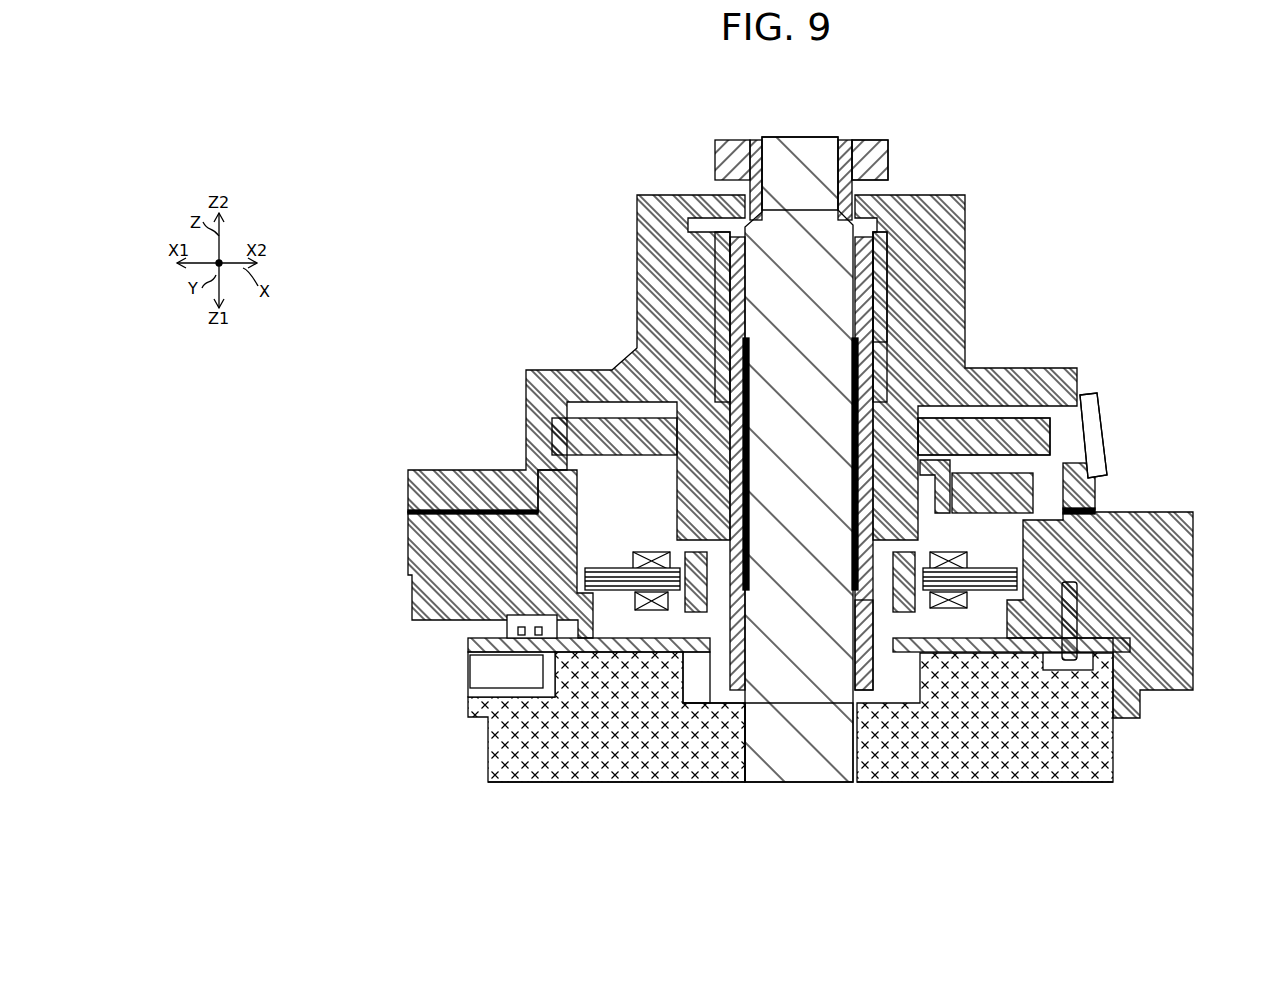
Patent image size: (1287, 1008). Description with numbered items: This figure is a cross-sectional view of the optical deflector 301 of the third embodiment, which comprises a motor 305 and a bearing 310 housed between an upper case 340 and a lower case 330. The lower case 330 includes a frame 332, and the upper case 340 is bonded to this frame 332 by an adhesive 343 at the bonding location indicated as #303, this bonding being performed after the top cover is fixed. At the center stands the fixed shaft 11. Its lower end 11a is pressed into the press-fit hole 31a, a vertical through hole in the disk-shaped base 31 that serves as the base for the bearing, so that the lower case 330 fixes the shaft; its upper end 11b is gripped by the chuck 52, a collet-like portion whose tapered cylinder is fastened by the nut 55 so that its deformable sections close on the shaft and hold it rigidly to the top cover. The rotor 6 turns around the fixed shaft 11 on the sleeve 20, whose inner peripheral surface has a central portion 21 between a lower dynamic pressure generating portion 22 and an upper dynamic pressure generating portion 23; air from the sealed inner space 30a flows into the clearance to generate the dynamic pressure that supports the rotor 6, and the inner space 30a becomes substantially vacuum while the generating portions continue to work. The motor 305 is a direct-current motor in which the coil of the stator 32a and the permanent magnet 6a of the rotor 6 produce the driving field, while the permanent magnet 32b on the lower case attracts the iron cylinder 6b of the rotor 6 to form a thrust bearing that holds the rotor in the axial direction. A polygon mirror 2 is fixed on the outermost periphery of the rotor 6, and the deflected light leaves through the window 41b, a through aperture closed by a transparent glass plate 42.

The optical deflector 301 is at (354, 92).
The motor 305 is at (367, 130).
The bearing 310 is at (407, 176).
The upper case 340 is at (572, 310).
The adhesive 343 is at (408, 512).
The bonding location 303 is at (391, 533).
The frame 332 is at (420, 641).
The lower case 330 is at (431, 756).
The base 31 is at (571, 798).
The inner space 30a is at (652, 625).
The press-fit hole 31a is at (735, 782).
The lower end 11a is at (775, 745).
The fixed shaft 11 is at (815, 740).
The upper end 11b is at (805, 163).
The chuck 52 is at (746, 143).
The nut 55 is at (887, 140).
The sleeve 20 is at (870, 272).
The dynamic pressure generating portion 23 is at (873, 307).
The central portion 21 is at (876, 393).
The dynamic pressure generating portion 22 is at (880, 652).
The rotor 6 is at (968, 415).
The permanent magnet 6a is at (913, 613).
The iron cylinder 6b is at (975, 418).
The permanent magnet 32b is at (971, 488).
The stator 32a is at (957, 598).
The polygon mirror 2 is at (1073, 438).
The window 41b is at (1103, 426).
The transparent glass plate 42 is at (1099, 445).